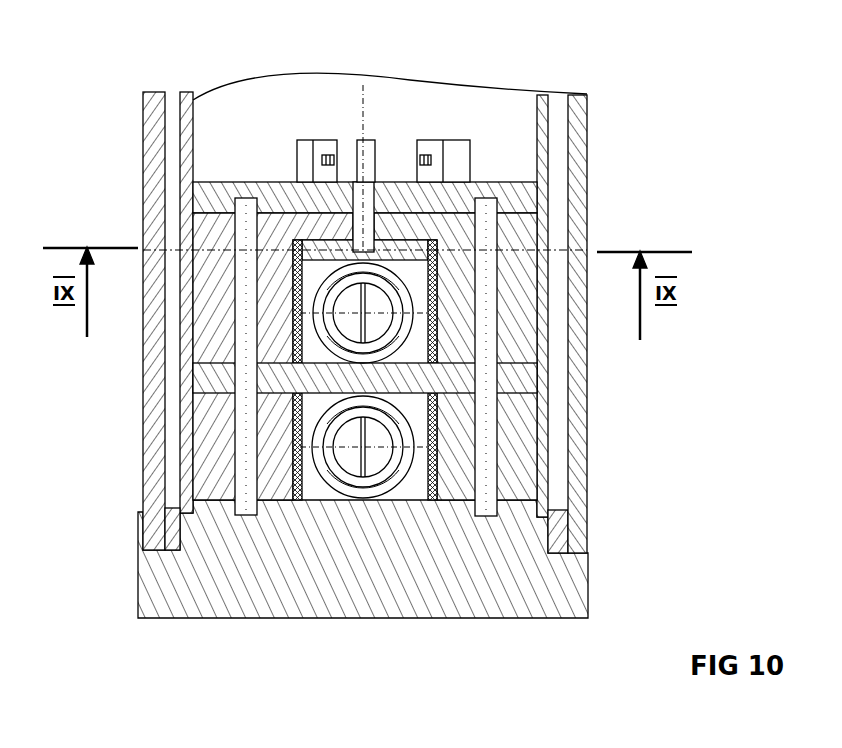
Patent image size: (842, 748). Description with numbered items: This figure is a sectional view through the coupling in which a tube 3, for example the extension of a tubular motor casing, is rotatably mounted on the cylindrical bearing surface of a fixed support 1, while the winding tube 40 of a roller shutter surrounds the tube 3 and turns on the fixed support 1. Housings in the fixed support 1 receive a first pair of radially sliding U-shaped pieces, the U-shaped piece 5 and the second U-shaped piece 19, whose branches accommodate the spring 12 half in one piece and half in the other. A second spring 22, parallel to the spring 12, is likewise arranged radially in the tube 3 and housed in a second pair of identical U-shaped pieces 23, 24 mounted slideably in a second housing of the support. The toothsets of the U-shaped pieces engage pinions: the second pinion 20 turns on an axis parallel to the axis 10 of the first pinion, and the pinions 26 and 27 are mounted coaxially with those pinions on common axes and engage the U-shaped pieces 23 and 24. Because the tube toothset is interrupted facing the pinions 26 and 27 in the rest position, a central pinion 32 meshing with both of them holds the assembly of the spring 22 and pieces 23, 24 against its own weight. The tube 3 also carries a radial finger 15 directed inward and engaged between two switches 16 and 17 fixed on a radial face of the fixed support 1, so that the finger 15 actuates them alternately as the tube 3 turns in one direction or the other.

The fixed support 1 is at (535, 588).
The tube 3 is at (543, 443).
The U-shaped piece 5 is at (322, 478).
The axis 10 is at (390, 50).
The spring 12 is at (327, 470).
The radial finger 15 is at (377, 140).
The switch 16 is at (302, 140).
The switch 17 is at (455, 158).
The second U-shaped piece 19 is at (427, 487).
The second pinion 20 is at (547, 560).
The second spring 22 is at (328, 282).
The U-shaped piece 23 is at (297, 340).
The U-shaped piece 24 is at (432, 333).
The pinion 26 is at (208, 232).
The pinion 27 is at (520, 235).
The central pinion 32 is at (450, 215).
The winding tube 40 is at (577, 493).